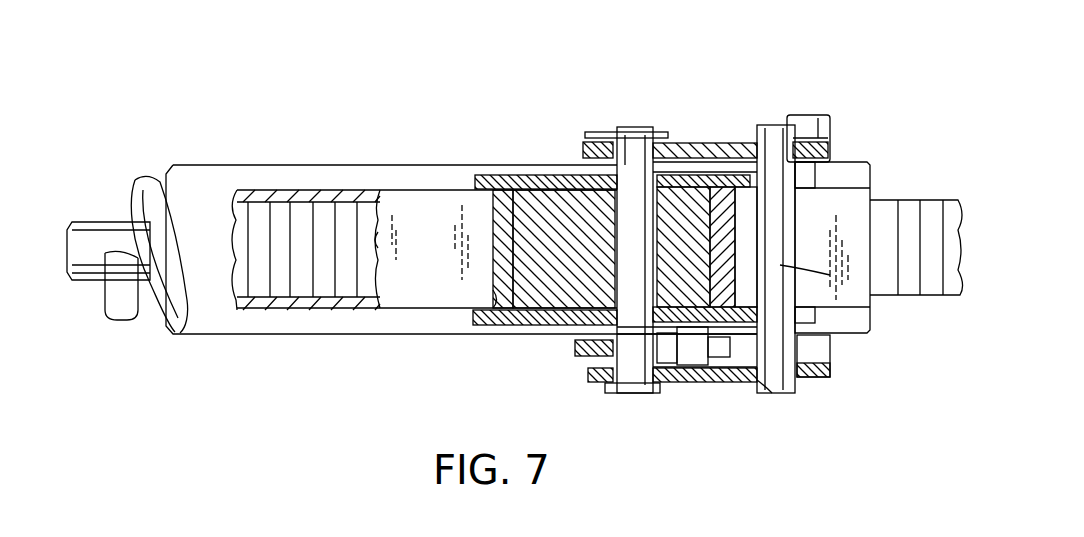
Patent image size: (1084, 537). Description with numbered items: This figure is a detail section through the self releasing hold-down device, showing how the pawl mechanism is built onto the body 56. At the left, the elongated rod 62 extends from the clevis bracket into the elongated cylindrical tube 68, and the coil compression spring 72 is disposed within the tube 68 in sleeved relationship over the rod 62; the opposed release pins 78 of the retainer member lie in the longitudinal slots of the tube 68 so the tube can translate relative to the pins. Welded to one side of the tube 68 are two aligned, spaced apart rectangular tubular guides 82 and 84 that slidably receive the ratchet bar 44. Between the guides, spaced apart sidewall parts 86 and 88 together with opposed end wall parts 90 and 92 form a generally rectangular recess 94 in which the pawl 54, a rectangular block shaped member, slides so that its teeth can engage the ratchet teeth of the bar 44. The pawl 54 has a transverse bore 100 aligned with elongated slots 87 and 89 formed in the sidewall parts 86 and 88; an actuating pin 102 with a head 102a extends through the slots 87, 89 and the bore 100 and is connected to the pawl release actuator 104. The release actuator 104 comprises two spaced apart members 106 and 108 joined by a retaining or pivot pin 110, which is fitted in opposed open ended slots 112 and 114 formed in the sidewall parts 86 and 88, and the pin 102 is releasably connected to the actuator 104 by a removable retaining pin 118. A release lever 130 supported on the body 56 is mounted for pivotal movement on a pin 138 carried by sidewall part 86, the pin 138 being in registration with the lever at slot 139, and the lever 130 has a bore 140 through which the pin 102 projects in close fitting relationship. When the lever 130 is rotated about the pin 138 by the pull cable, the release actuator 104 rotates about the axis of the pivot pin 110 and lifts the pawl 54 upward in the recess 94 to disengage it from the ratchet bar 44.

The elongated bar 44 is at (932, 293).
The pawl 54 is at (540, 195).
The body 56 is at (507, 176).
The elongated rod 62 is at (103, 222).
The elongated cylindrical tube 68 is at (225, 340).
The coil compression spring 72 is at (122, 320).
The release pins 78 is at (808, 112).
The tubular guide 82 is at (404, 190).
The tubular guide 84 is at (857, 222).
The sidewall part 86 is at (498, 327).
The elongated slot 87 is at (627, 388).
The sidewall part 88 is at (496, 190).
The elongated slot 89 is at (629, 130).
The end wall part 90 is at (495, 290).
The end wall part 92 is at (780, 265).
The recess 94 is at (480, 257).
The transverse bore 100 is at (660, 225).
The actuating pin 102 is at (828, 353).
The head 102a is at (645, 385).
The pawl release actuator 104 is at (675, 143).
The member 106 is at (722, 143).
The member 108 is at (597, 385).
The pivot pin 110 is at (793, 218).
The open ended slot 112 is at (762, 382).
The open ended slot 114 is at (770, 142).
The removable retaining pin 118 is at (594, 140).
The release lever 130 is at (572, 350).
The pin 138 is at (720, 370).
The slot 139 is at (700, 380).
The bore 140 is at (712, 382).